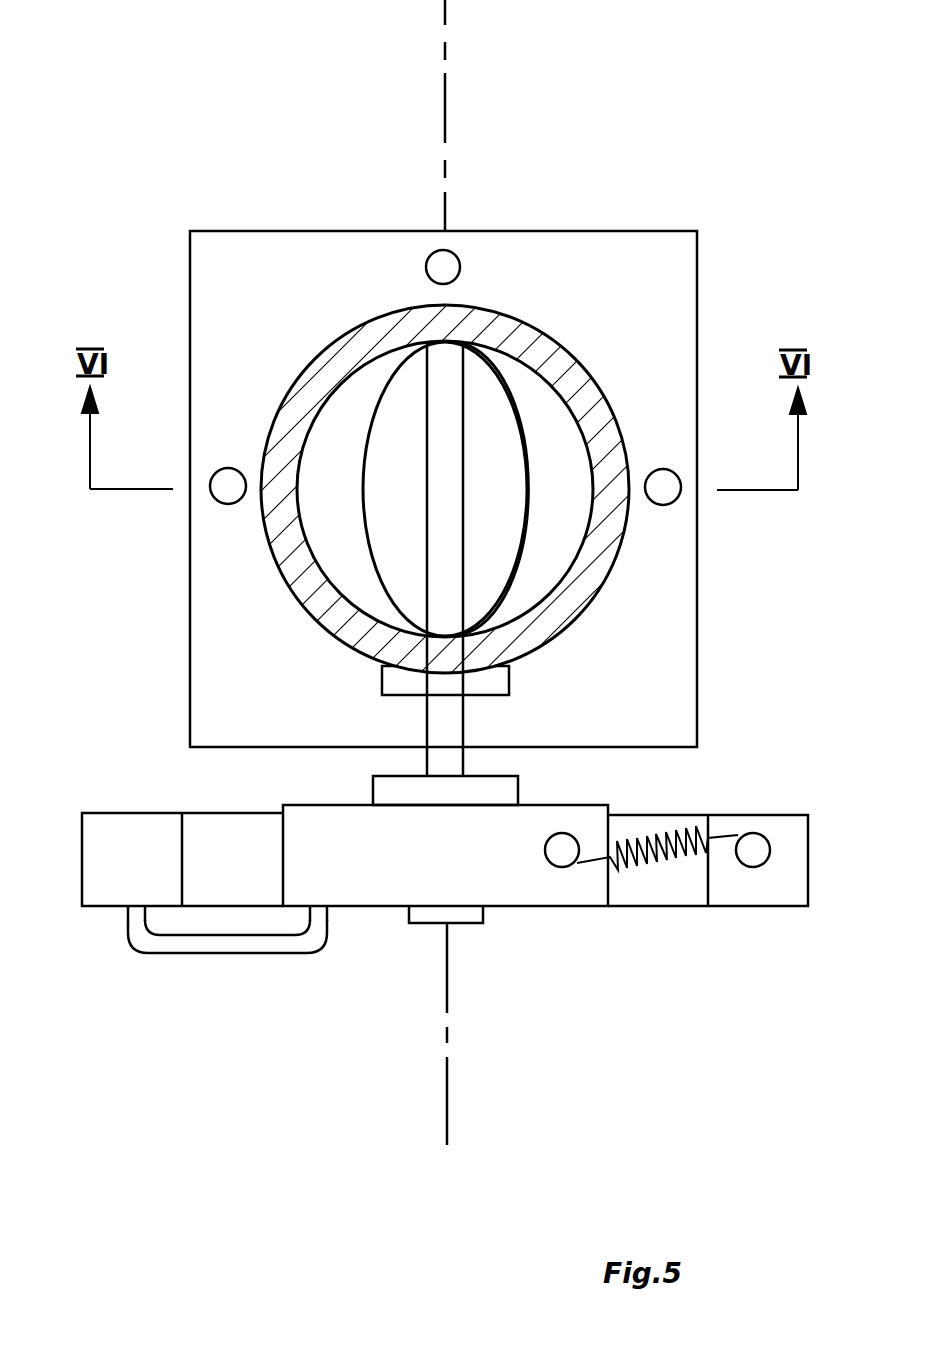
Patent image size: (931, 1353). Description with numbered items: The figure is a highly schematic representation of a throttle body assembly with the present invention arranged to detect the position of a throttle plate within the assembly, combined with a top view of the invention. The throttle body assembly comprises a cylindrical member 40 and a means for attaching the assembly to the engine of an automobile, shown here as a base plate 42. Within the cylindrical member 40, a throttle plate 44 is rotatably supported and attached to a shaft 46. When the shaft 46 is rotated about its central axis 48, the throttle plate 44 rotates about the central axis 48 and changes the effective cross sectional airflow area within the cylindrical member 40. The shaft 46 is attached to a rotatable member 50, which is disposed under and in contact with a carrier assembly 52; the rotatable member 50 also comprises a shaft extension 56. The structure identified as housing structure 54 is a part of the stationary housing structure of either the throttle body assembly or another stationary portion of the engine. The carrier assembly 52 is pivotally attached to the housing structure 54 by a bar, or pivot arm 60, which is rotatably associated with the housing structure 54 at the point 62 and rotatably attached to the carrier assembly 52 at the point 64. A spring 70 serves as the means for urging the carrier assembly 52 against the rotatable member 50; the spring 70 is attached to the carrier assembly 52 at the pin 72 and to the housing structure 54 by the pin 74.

The cylindrical member 40 is at (573, 356).
The base plate 42 is at (697, 313).
The throttle plate 44 is at (408, 480).
The shaft 46 is at (453, 710).
The central axis 48 is at (445, 110).
The rotatable member 50 is at (372, 787).
The carrier assembly 52 is at (590, 887).
The housing structure 54 is at (208, 842).
The shaft extension 56 is at (473, 913).
The pivot arm 60 is at (228, 943).
The pivot point on housing structure 62 is at (122, 908).
The pivot point on carrier assembly 64 is at (328, 908).
The spring 70 is at (653, 842).
The pin 72 is at (555, 848).
The pin 74 is at (762, 850).